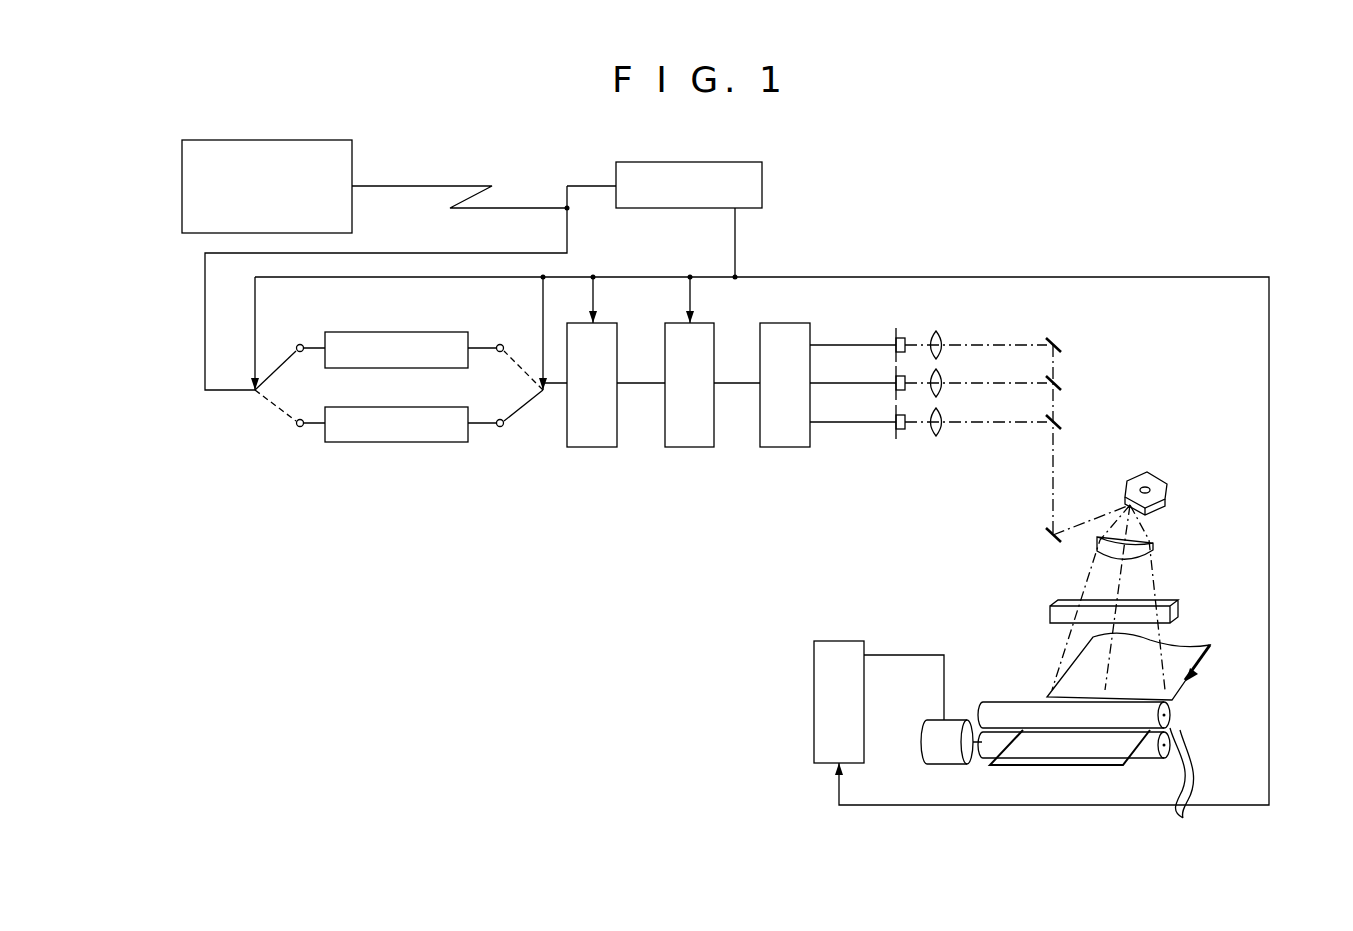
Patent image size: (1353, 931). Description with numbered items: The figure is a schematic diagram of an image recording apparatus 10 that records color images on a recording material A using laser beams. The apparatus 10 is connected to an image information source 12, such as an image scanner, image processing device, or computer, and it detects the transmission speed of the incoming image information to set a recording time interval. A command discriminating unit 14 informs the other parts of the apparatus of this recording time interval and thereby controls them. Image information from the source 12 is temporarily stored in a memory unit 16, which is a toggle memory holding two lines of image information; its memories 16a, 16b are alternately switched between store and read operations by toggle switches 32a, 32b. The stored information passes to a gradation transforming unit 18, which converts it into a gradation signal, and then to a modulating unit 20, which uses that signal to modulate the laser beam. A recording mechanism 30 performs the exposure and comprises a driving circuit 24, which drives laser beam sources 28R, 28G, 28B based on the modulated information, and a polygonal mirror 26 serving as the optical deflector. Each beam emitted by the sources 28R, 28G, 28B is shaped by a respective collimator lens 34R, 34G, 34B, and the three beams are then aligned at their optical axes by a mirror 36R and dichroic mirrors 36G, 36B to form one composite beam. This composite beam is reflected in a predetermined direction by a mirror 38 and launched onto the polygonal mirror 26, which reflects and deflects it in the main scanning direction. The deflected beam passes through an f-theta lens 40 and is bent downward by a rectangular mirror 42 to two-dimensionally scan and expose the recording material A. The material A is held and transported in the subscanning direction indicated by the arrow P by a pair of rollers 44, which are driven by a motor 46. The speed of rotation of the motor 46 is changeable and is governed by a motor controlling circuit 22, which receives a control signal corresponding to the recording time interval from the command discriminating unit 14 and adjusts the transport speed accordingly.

The image recording apparatus 10 is at (650, 607).
The image information source 12 is at (278, 148).
The command discriminating unit 14 is at (750, 181).
The memory unit 16 is at (401, 415).
The memory 16a is at (414, 338).
The memory 16b is at (437, 432).
The gradation transforming unit 18 is at (595, 443).
The modulating unit 20 is at (686, 440).
The motor controlling circuit 22 is at (814, 717).
The driving circuit 24 is at (785, 440).
The polygonal mirror 26 is at (1163, 484).
The laser beam source 28R is at (905, 330).
The laser beam source 28G is at (897, 398).
The laser beam source 28B is at (899, 433).
The recording mechanism 30 is at (870, 508).
The toggle switch 32a is at (283, 368).
The toggle switch 32b is at (522, 410).
The collimator lens 34R is at (938, 332).
The collimator lens 34G is at (941, 383).
The collimator lens 34B is at (938, 436).
The mirror 36R is at (1057, 342).
The dichroic mirror 36G is at (1062, 388).
The dichroic mirror 36B is at (1062, 428).
The mirror 38 is at (1050, 533).
The f-theta lens 40 is at (1150, 541).
The rectangular mirror 42 is at (1175, 612).
The pair of rollers 44 is at (1197, 790).
The motor 46 is at (938, 765).
The recording material A is at (1205, 662).
The arrow P is at (1203, 680).